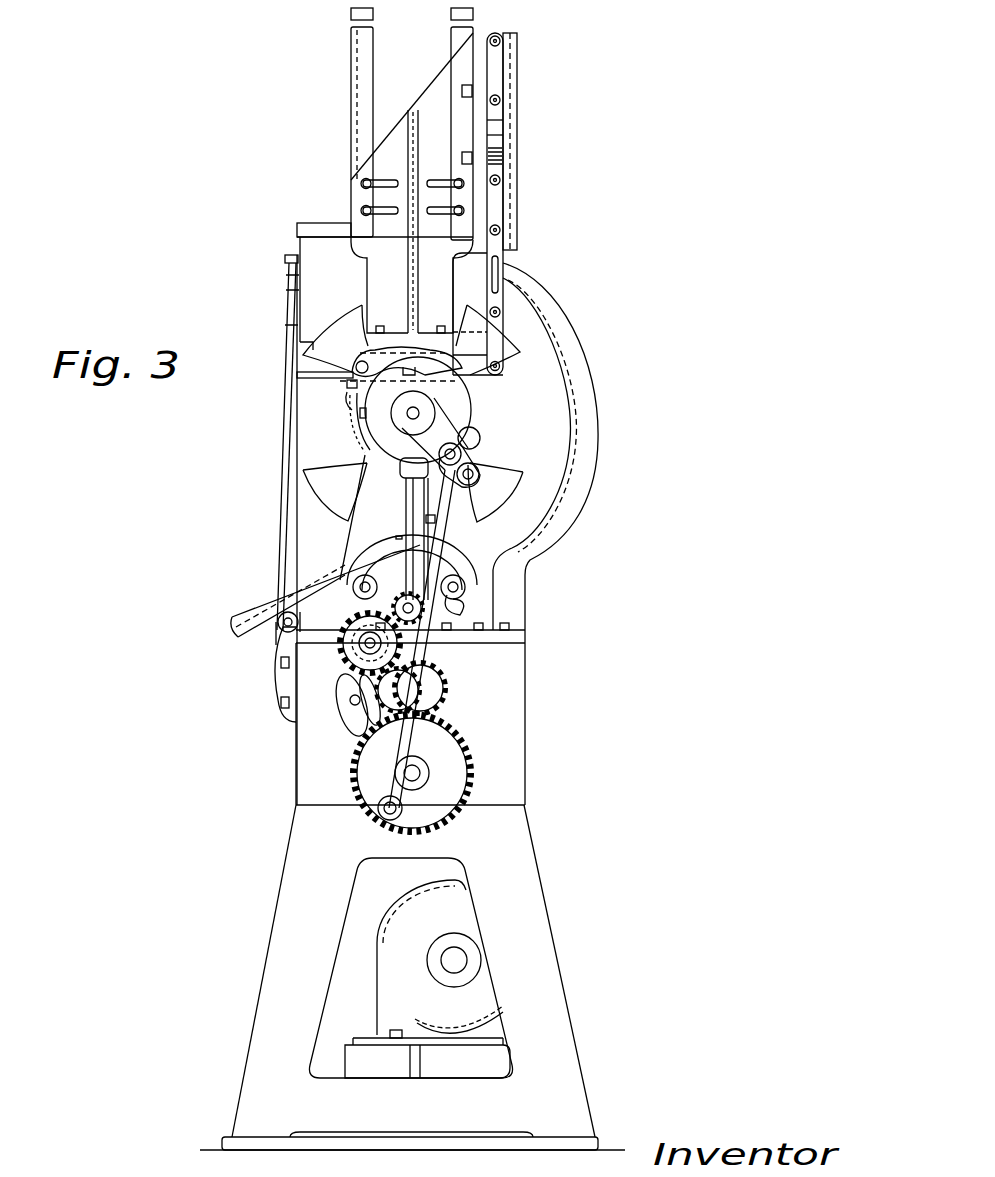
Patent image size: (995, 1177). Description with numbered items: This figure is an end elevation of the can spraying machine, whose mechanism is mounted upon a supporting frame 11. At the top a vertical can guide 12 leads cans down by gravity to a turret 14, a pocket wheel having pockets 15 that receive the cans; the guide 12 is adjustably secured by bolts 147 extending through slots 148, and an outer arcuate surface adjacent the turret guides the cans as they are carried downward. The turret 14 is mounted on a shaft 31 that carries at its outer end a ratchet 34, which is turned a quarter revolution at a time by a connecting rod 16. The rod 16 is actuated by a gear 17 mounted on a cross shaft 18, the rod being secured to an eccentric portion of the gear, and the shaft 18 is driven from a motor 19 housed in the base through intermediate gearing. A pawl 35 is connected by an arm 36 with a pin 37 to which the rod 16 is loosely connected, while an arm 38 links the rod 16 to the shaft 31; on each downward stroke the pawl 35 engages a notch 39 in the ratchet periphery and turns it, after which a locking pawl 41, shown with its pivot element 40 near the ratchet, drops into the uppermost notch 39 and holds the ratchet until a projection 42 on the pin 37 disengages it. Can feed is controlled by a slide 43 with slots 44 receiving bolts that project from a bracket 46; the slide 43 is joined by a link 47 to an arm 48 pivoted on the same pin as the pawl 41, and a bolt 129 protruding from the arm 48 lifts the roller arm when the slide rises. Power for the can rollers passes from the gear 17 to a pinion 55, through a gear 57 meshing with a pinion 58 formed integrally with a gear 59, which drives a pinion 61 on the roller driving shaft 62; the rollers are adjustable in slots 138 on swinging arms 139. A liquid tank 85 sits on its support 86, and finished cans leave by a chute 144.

The supporting frame 11 is at (520, 860).
The can guide 12 is at (357, 88).
The turret 14 is at (330, 493).
The pocket 15 is at (378, 400).
The connecting rod 16 is at (415, 640).
The gear 17 is at (452, 768).
The cross shaft 18 is at (420, 778).
The motor 19 is at (387, 975).
The shaft 31 is at (410, 410).
The ratchet 34 is at (442, 403).
The pawl 35 is at (412, 483).
The arm 36 is at (474, 466).
The pin 37 is at (458, 448).
The arm 38 is at (400, 466).
The notch 39 is at (362, 422).
The pivot pin 40 is at (356, 376).
The pawl 41 is at (400, 346).
The projection 42 is at (472, 433).
The slide 43 is at (497, 270).
The slot 44 is at (496, 70).
The bracket 46 is at (510, 150).
The link 47 is at (492, 337).
The arm 48 is at (499, 369).
The pinion 55 is at (440, 700).
The gear 57 is at (447, 683).
The pinion 58 is at (345, 692).
The gear 59 is at (348, 655).
The pinion 61 is at (393, 580).
The roller driving shaft 62 is at (266, 615).
The liquid tank 85 is at (318, 290).
The support 86 is at (279, 521).
The bolt 129 is at (582, 452).
The slot 138 is at (483, 547).
The swinging arm 139 is at (447, 612).
The chute 144 is at (241, 642).
The bolt 147 is at (458, 180).
The slot 148 is at (432, 183).